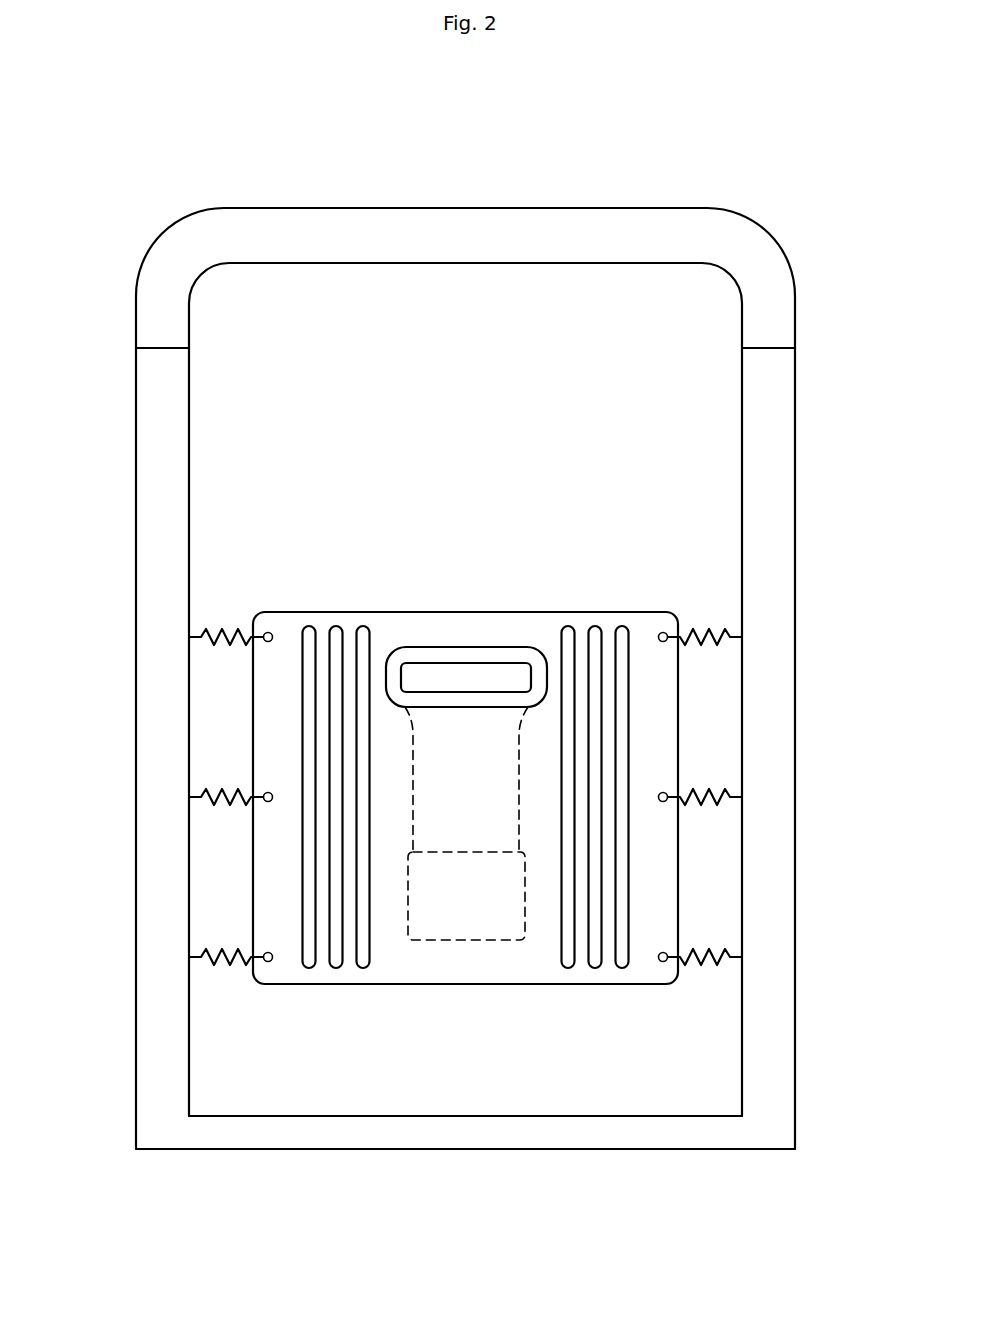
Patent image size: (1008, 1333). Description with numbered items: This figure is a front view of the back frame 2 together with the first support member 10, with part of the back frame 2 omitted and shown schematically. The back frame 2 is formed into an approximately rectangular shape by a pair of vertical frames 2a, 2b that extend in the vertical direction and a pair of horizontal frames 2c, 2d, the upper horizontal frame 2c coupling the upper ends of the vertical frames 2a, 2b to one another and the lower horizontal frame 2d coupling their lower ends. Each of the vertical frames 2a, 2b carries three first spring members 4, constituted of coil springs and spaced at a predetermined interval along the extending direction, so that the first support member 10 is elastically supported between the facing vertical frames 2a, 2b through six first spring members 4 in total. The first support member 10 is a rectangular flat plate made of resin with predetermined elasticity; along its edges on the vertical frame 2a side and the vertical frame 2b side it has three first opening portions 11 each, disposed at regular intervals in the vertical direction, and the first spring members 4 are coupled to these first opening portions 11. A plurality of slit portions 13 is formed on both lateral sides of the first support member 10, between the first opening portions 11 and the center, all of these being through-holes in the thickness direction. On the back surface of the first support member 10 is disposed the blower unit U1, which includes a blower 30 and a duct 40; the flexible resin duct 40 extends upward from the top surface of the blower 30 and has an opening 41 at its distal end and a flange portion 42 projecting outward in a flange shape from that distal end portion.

The back frame 2 is at (810, 132).
The vertical frame 2a is at (165, 711).
The vertical frame 2b is at (770, 713).
The horizontal frame 2c is at (470, 235).
The horizontal frame 2d is at (473, 1132).
The first support member 10 is at (665, 490).
The first spring member 4 is at (220, 645).
The first opening portion 11 is at (269, 641).
The slit portion 13 is at (370, 630).
The duct 40 is at (488, 552).
The opening 41 is at (449, 663).
The flange portion 42 is at (482, 655).
The blower 30 is at (473, 920).
The blower unit U1 is at (533, 946).